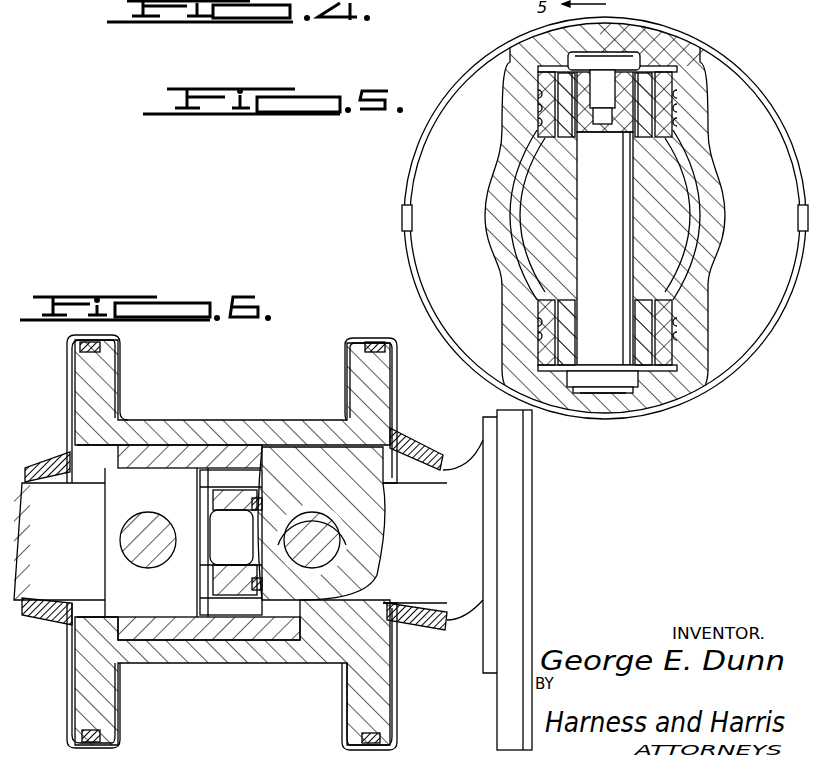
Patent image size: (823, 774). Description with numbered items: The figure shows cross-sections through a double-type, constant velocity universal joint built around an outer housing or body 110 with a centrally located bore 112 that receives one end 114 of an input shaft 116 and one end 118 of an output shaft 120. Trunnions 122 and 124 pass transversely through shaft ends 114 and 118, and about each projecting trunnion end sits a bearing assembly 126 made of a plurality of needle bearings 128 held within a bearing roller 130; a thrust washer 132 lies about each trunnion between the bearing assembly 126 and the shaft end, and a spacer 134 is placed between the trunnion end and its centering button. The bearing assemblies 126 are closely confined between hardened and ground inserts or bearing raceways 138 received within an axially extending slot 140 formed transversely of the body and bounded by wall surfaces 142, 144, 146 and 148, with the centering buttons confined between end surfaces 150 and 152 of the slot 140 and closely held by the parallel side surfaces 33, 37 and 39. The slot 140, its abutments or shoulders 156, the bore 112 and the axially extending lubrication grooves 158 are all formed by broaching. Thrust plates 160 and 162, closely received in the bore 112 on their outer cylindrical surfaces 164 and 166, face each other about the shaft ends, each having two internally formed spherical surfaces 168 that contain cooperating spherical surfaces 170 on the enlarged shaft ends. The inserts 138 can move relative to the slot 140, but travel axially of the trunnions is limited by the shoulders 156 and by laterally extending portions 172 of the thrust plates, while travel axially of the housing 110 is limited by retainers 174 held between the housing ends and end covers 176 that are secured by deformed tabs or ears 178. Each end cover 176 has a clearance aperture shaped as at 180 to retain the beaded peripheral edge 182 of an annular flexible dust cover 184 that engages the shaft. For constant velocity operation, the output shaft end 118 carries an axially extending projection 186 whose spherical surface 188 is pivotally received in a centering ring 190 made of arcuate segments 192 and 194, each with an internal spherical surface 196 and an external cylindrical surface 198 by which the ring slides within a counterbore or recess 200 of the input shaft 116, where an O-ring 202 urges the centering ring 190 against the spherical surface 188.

In FIG. 5, the longitudinally extending side surface 33 is at (566, 54).
In FIG. 5, the longitudinally extending side surface 37 is at (578, 362).
In FIG. 5, the longitudinally extending side surface 39 is at (620, 395).
In FIG. 5, the outer housing or body 110 is at (408, 158).
In FIG. 5, the centrally located bore 112 is at (530, 178).
In FIG. 6, the centrally located bore 112 is at (152, 440).
In FIG. 5, the end of input shaft 114 is at (495, 255).
In FIG. 6, the end of input shaft 114 is at (292, 645).
In FIG. 6, the input shaft 116 is at (470, 592).
In FIG. 6, the end of output shaft 118 is at (119, 540).
In FIG. 6, the output shaft 120 is at (90, 510).
In FIG. 5, the trunnion 122 is at (690, 250).
In FIG. 6, the trunnion 122 is at (355, 528).
In FIG. 6, the trunnion 124 is at (105, 560).
In FIG. 5, the bearing assembly 126 is at (665, 48).
In FIG. 5, the needle bearing 128 is at (640, 327).
In FIG. 5, the bearing roller 130 is at (740, 60).
In FIG. 5, the thrust washer 132 is at (545, 150).
In FIG. 5, the spacer 134 is at (676, 378).
In FIG. 5, the insert or bearing raceway 138 is at (512, 93).
In FIG. 5, the axially extending slot 140 is at (503, 372).
In FIG. 5, the wall surface of slot 142 is at (538, 100).
In FIG. 5, the wall surface of slot 144 is at (680, 140).
In FIG. 5, the wall surface of slot 146 is at (538, 305).
In FIG. 5, the wall surface of slot 148 is at (700, 300).
In FIG. 5, the end surface of slot 150 is at (635, 50).
In FIG. 5, the end surface of slot 152 is at (600, 392).
In FIG. 5, the abutment or shoulder 156 is at (512, 60).
In FIG. 5, the lubrication groove 158 is at (538, 118).
In FIG. 5, the thrust plate 160 is at (488, 212).
In FIG. 5, the thrust plate 162 is at (700, 220).
In FIG. 5, the outer cylindrical surface 164 is at (560, 208).
In FIG. 6, the outer cylindrical surface 164 is at (185, 470).
In FIG. 5, the outer cylindrical surface 166 is at (705, 240).
In FIG. 6, the outer cylindrical surface 166 is at (62, 662).
In FIG. 5, the internally formed spherical surface 168 is at (525, 230).
In FIG. 6, the internally formed spherical surface 168 is at (130, 440).
In FIG. 5, the spherical surface 170 is at (555, 188).
In FIG. 6, the spherical surface 170 is at (145, 470).
In FIG. 5, the laterally extending portion 172 is at (540, 136).
In FIG. 5, the retainer 174 is at (400, 425).
In FIG. 6, the retainer 174 is at (68, 368).
In FIG. 6, the end cover 176 is at (70, 352).
In FIG. 5, the deformed tab or ear 178 is at (735, 368).
In FIG. 6, the deformed tab or ear 178 is at (343, 742).
In FIG. 6, the clearance aperture shape 180 is at (62, 430).
In FIG. 6, the beaded peripheral edge 182 is at (60, 650).
In FIG. 6, the dust cover 184 is at (32, 606).
In FIG. 6, the axially extending projection 186 is at (265, 505).
In FIG. 6, the spherical surface 188 is at (232, 576).
In FIG. 6, the centering ring 190 is at (205, 500).
In FIG. 6, the arcuate segment 192 is at (240, 500).
In FIG. 6, the arcuate segment 194 is at (213, 580).
In FIG. 6, the internally formed spherical surface 196 is at (212, 520).
In FIG. 6, the external cylindrical surface 198 is at (205, 642).
In FIG. 6, the counterbore or recess 200 is at (228, 498).
In FIG. 6, the O-ring 202 is at (236, 645).